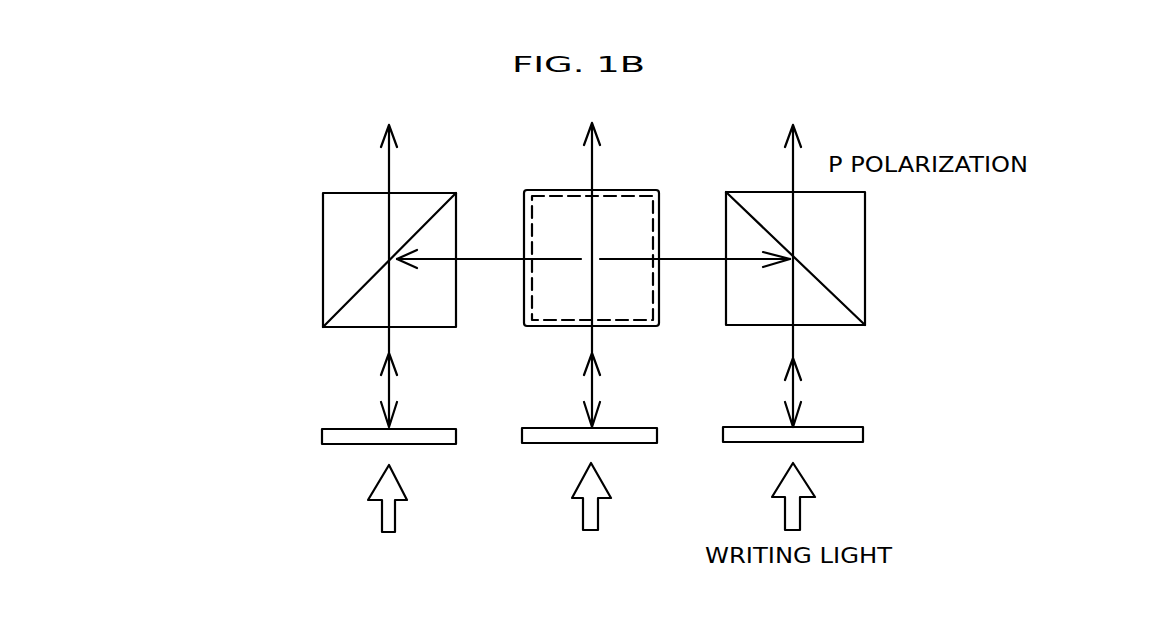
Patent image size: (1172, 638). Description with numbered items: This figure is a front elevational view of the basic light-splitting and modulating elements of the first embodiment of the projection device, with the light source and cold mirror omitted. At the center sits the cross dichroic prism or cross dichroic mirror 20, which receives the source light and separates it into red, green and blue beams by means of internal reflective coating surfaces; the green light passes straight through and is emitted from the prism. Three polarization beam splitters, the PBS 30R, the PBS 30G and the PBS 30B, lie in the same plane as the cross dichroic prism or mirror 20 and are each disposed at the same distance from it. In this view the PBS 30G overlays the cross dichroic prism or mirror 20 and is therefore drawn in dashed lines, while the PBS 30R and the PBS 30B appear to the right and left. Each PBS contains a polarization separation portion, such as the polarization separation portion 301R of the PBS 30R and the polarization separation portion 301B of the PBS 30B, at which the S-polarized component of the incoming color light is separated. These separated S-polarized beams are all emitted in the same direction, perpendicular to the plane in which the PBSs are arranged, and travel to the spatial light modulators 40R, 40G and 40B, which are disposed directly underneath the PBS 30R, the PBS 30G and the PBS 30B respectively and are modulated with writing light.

The polarization beam splitter 30B is at (323, 215).
The polarization separation portion 301B is at (345, 305).
The polarization beam splitter 30G is at (567, 190).
The cross dichroic prism or cross dichroic mirror 20 is at (640, 190).
The polarization beam splitter 30R is at (865, 238).
The polarization separation portion 301R is at (837, 297).
The spatial light modulator 40B is at (327, 436).
The spatial light modulator 40G is at (538, 436).
The spatial light modulator 40R is at (848, 435).